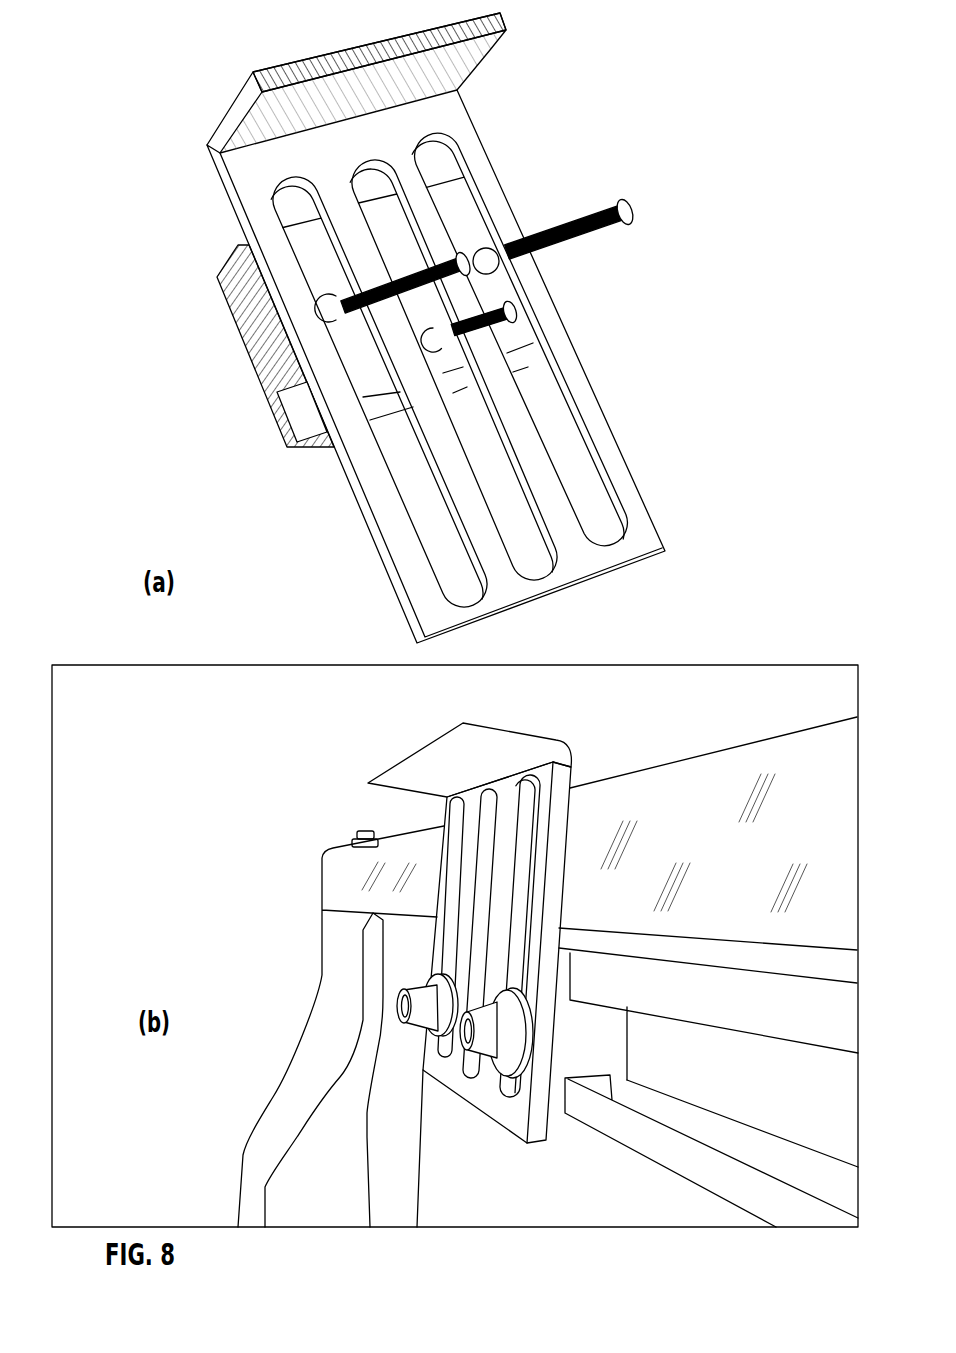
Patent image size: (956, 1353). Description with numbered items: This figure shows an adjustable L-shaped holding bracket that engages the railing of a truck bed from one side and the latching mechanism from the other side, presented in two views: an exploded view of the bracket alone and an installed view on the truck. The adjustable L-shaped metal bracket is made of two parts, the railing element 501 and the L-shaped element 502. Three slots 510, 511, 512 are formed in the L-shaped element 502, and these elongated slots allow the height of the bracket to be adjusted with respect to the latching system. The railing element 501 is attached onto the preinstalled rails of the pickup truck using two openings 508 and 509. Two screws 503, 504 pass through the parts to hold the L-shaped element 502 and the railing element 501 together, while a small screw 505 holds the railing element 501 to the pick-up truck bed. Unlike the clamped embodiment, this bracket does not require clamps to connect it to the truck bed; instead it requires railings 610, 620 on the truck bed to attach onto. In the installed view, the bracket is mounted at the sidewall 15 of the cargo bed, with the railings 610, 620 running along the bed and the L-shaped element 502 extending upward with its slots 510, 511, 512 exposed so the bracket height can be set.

The sidewall 15 is at (708, 785).
The railing element 501 is at (238, 327).
The L-shaped element 502 is at (492, 50).
The screw 503 is at (403, 273).
The screw 504 is at (588, 215).
The small screw 505 is at (516, 315).
The opening 508 is at (298, 413).
The opening 509 is at (238, 280).
The slot 510 is at (440, 572).
The slot 511 is at (547, 553).
The slot 512 is at (587, 492).
The railing 610 is at (713, 983).
The railing 620 is at (747, 1147).